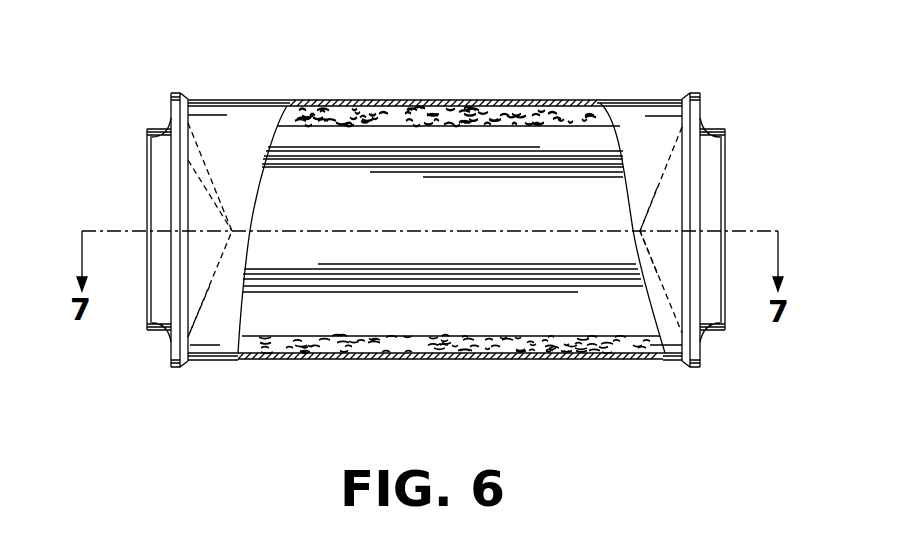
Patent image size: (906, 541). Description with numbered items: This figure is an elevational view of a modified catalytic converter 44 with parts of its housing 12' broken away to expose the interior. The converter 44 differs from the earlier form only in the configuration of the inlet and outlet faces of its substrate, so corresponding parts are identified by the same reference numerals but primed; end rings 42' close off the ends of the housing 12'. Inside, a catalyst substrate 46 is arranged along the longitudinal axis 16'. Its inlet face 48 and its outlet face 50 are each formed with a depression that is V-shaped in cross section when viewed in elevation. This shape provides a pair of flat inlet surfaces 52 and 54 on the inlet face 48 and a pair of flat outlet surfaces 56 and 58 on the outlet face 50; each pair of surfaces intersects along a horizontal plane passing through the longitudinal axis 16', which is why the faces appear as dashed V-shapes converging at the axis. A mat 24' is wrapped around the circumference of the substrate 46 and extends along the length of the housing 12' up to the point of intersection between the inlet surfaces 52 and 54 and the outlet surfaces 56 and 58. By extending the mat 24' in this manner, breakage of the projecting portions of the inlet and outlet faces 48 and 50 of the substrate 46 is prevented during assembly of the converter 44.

The housing 12' is at (425, 191).
The longitudinal axis 16' is at (110, 230).
The mat 24' is at (451, 232).
The end ring 42' is at (441, 206).
The catalytic converter 44 is at (614, 86).
The catalyst substrate 46 is at (488, 222).
The inlet face 48 is at (200, 168).
The outlet face 50 is at (680, 163).
The flat inlet surface 52 is at (214, 195).
The flat inlet surface 54 is at (165, 282).
The flat outlet surface 56 is at (657, 188).
The flat outlet surface 58 is at (657, 273).